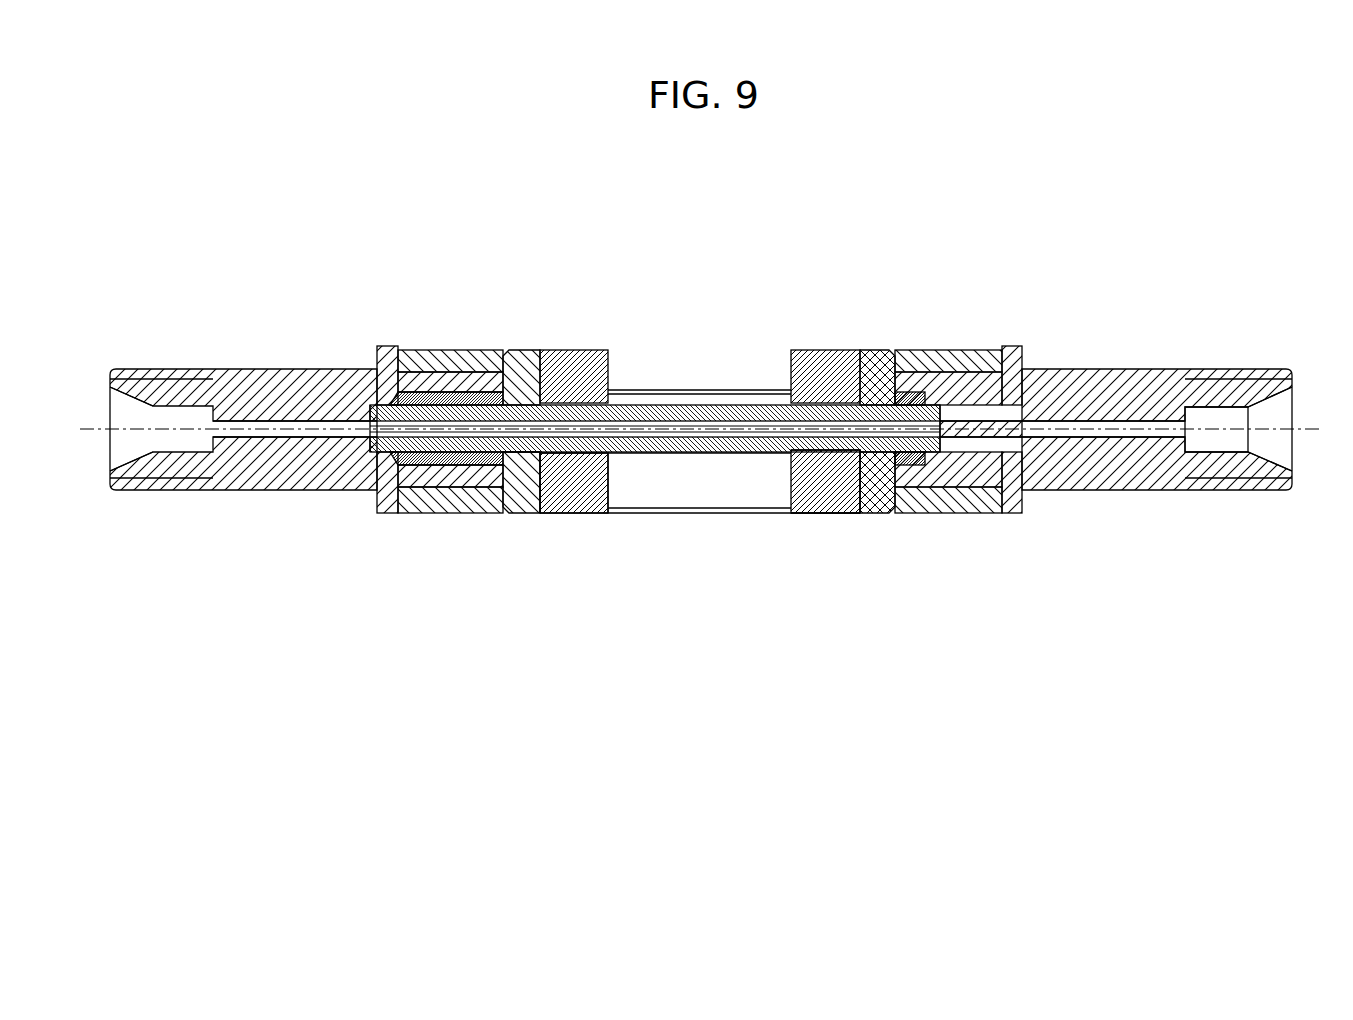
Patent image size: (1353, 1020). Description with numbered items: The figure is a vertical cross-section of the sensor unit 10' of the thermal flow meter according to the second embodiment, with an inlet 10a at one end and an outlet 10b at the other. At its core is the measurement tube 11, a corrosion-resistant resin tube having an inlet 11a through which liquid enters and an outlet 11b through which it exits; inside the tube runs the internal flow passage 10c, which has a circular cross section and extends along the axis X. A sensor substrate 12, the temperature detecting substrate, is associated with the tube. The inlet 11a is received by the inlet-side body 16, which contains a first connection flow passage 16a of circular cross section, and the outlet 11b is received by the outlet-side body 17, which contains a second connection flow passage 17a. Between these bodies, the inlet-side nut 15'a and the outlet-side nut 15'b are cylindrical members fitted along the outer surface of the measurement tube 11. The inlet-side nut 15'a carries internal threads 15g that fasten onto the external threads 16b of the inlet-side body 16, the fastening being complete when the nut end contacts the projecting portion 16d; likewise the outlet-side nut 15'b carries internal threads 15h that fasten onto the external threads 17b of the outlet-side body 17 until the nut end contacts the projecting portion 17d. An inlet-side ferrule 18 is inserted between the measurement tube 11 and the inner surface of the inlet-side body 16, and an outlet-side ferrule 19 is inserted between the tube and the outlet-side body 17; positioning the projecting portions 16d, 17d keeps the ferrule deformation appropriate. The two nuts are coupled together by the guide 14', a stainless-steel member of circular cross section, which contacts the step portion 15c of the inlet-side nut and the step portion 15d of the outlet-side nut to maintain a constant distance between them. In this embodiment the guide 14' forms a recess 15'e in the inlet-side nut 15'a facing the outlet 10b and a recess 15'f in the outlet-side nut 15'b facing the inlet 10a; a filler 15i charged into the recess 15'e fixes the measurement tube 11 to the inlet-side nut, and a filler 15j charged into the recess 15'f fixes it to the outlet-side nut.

The sensor unit 10' is at (701, 341).
The inlet 10a is at (120, 400).
The outlet 10b is at (1262, 400).
The internal flow passage 10c is at (674, 445).
The measurement tube 11 is at (710, 405).
The inlet 11a is at (358, 418).
The outlet 11b is at (948, 420).
The sensor substrate 12 is at (725, 455).
The guide 14' is at (655, 497).
The inlet-side nut 15'a is at (537, 520).
The outlet-side nut 15'b is at (847, 541).
The step portion 15c is at (522, 350).
The step portion 15d is at (876, 355).
The recess 15'e is at (584, 404).
The recess 15'f is at (815, 402).
The internal threads 15g is at (440, 372).
The internal threads 15h is at (940, 372).
The filler 15i is at (575, 480).
The filler 15j is at (830, 495).
The inlet-side body 16 is at (305, 490).
The connection flow passage 16a is at (250, 460).
The external threads 16b is at (440, 487).
The projecting portion 16d is at (386, 513).
The outlet-side body 17 is at (1065, 490).
The connection flow passage 17a is at (1130, 440).
The external threads 17b is at (935, 475).
The projecting portion 17d is at (1010, 513).
The inlet-side ferrule 18 is at (485, 465).
The outlet-side ferrule 19 is at (905, 470).
The axis X is at (1225, 445).